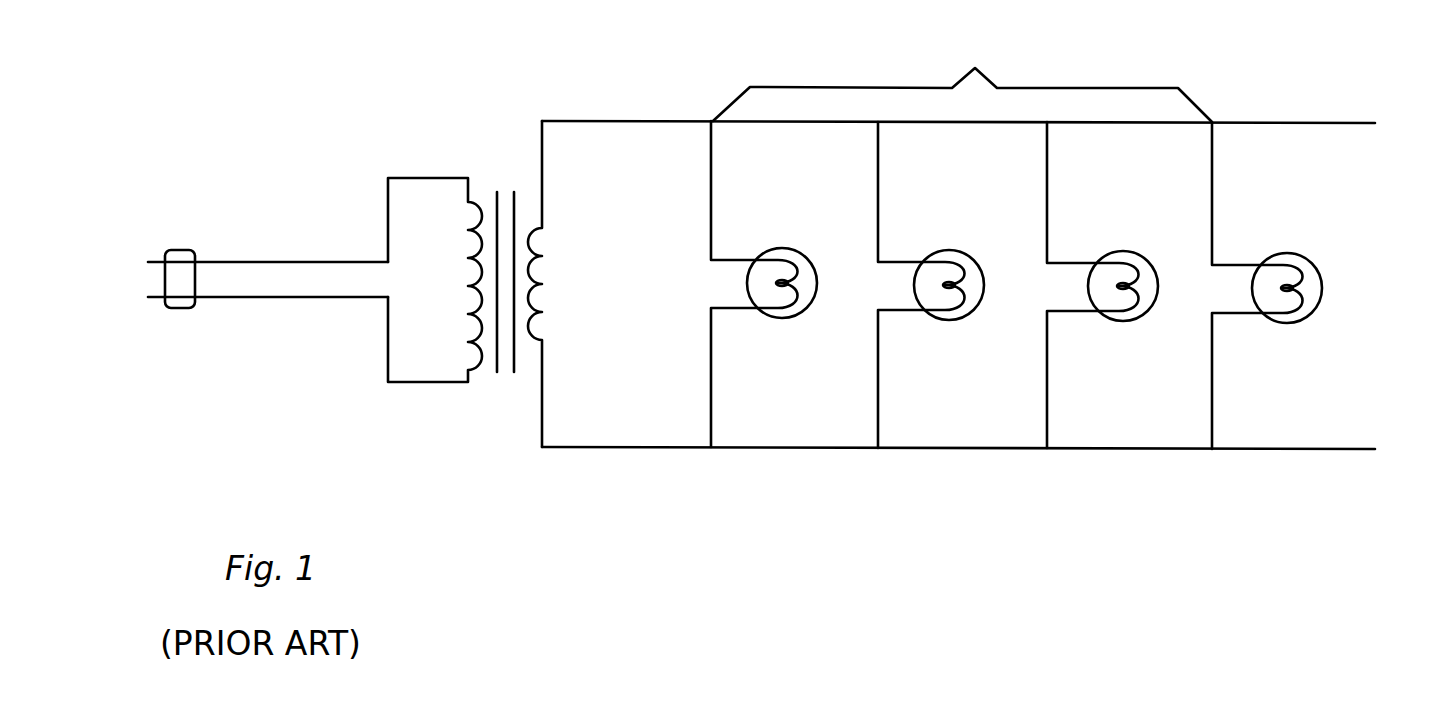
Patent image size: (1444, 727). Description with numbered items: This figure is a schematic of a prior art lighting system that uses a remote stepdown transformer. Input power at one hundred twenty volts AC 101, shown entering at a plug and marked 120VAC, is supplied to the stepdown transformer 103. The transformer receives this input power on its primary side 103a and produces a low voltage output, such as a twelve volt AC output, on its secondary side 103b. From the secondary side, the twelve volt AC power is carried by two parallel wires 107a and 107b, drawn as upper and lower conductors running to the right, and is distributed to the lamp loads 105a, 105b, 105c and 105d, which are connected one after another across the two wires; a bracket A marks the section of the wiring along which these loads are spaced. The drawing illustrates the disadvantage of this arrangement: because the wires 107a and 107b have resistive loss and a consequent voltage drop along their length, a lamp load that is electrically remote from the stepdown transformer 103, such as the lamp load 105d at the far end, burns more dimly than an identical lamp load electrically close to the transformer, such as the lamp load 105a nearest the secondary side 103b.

The input power at 120 volts AC 101 is at (161, 240).
The 120 VAC supply 120VAC is at (152, 284).
The stepdown transformer 103 is at (490, 398).
The primary side 103a is at (434, 168).
The secondary side 103b is at (551, 108).
The parallel wire 107a is at (697, 86).
The parallel wire 107b is at (683, 449).
The lamp load 105a is at (786, 325).
The lamp load 105b is at (965, 325).
The lamp load 105c is at (1141, 325).
The lamp load 105d is at (1316, 321).
The lamp string section A is at (962, 74).